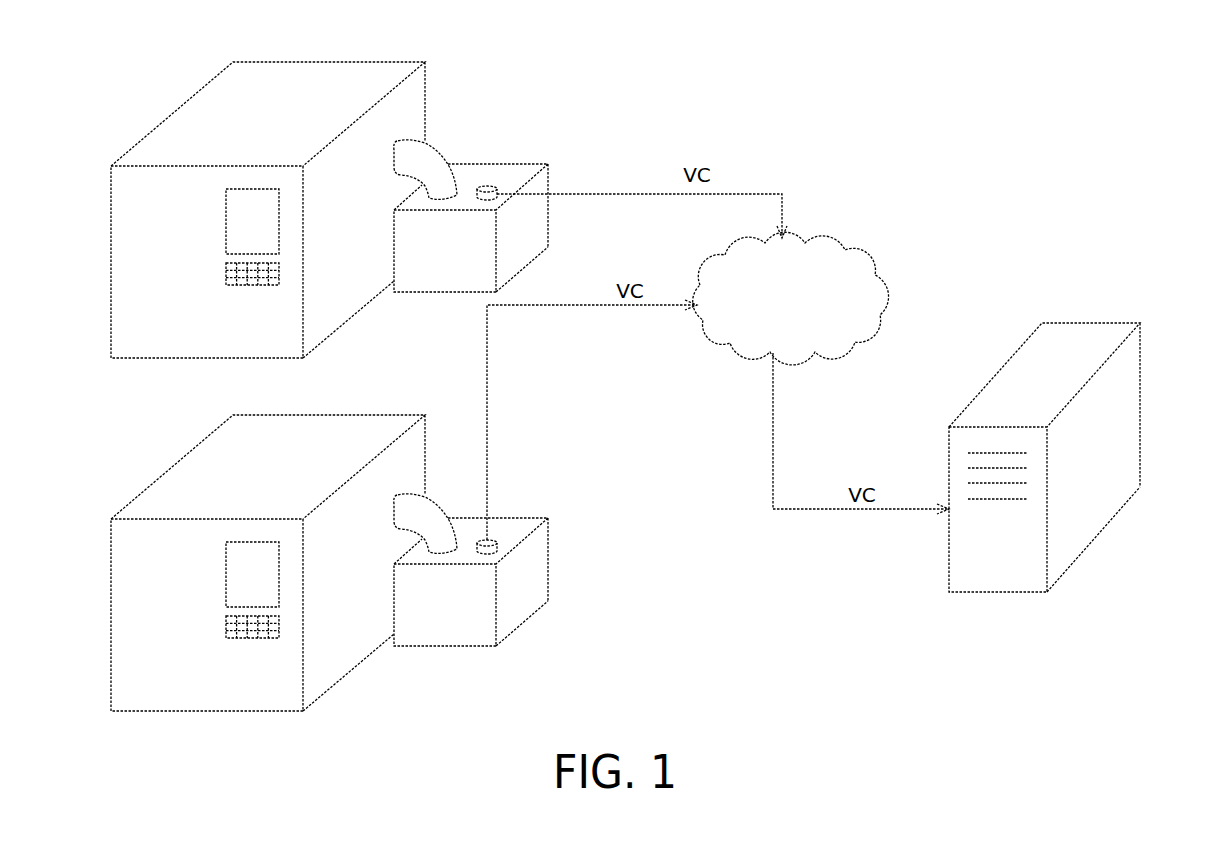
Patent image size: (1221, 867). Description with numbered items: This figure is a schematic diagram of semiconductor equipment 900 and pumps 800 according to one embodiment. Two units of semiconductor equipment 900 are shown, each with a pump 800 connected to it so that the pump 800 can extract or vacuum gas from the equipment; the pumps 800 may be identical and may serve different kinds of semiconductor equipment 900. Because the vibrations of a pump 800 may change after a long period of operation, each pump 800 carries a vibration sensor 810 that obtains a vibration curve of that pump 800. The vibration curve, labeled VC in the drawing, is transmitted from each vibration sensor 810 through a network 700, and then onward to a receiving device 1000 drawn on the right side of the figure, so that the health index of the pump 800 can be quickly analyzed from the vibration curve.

The semiconductor equipment 900 is at (353, 77).
The pump 800 is at (518, 163).
The vibration sensor 810 is at (487, 186).
The network 700 is at (764, 320).
The server 1000 is at (1103, 337).